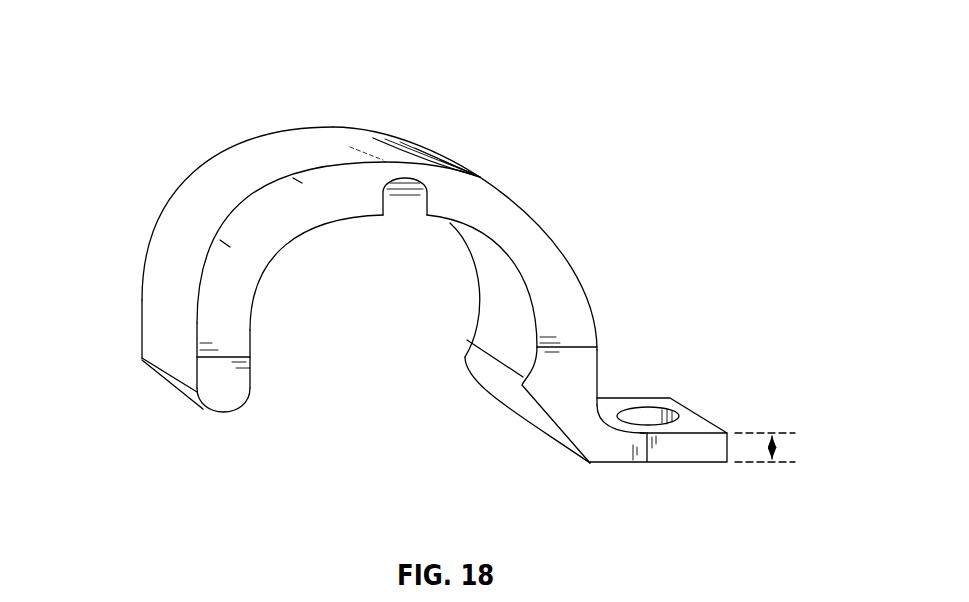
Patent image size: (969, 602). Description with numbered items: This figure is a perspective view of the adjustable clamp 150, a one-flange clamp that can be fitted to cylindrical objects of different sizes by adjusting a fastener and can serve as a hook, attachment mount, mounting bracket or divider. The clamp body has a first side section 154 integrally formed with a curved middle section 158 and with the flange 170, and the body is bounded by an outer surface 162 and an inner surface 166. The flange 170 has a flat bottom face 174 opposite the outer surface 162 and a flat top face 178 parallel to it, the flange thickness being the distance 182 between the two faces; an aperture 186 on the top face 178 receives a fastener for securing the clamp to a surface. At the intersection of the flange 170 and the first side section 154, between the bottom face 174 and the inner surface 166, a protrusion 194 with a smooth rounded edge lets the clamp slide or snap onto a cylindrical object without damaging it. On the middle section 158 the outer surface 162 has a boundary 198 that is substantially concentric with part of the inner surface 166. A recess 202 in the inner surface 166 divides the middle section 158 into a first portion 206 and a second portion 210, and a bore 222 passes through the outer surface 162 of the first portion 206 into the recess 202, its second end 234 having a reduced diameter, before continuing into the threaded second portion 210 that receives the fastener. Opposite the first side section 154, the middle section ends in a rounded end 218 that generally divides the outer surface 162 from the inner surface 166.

The adjustable clamp 150 is at (172, 57).
The first side section 154 is at (616, 315).
The middle section 158 is at (333, 122).
The outer surface 162 is at (200, 165).
The inner surface 166 is at (478, 309).
The flange 170 is at (678, 456).
The bottom face 174 is at (593, 464).
The top face 178 is at (612, 412).
The distance 182 is at (777, 449).
The aperture 186 is at (679, 413).
The protrusion 194 is at (503, 381).
The boundary 198 is at (540, 203).
The recess 202 is at (407, 173).
The first portion 206 is at (584, 261).
The second portion 210 is at (136, 291).
The rounded end 218 is at (184, 400).
The bore 222 is at (418, 190).
The second end 234 is at (410, 206).